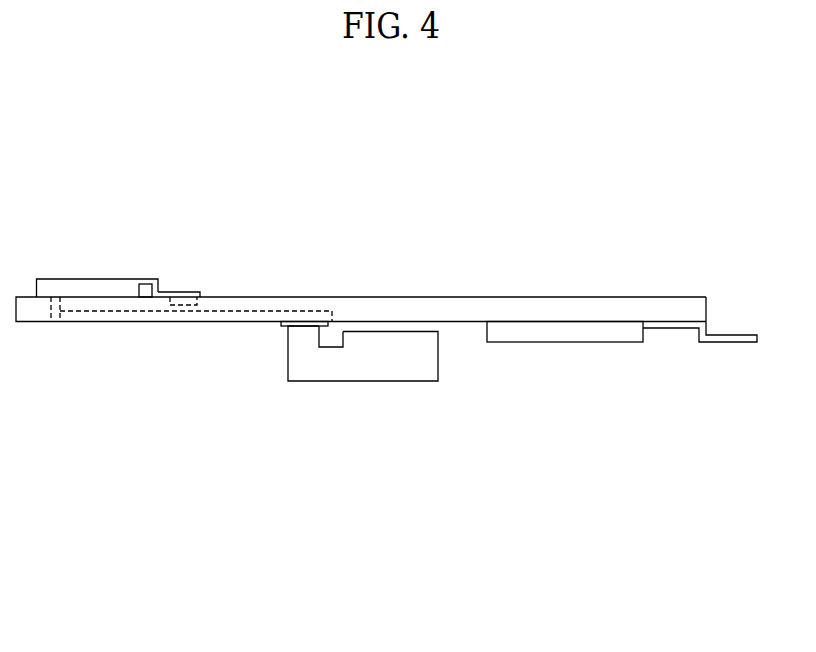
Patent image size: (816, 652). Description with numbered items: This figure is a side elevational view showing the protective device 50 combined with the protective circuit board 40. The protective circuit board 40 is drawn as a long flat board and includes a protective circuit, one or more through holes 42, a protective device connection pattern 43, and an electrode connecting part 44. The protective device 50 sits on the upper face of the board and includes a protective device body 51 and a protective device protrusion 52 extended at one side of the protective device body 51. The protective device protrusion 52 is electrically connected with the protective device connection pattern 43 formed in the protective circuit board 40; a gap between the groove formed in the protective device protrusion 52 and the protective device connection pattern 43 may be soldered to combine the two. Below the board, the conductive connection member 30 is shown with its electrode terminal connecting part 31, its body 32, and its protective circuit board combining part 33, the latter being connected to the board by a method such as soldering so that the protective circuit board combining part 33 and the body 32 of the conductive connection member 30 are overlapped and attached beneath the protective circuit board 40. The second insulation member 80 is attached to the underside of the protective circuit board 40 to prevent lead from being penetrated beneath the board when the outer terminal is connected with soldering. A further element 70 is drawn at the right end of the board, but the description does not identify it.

The conductive connection member 30 is at (330, 404).
The electrode terminal connecting part 31 is at (384, 387).
The body 32 is at (302, 367).
The protective circuit board combining part 33 is at (282, 328).
The protective circuit board 40 is at (533, 278).
The through hole 42 is at (51, 323).
The protective device connection pattern 43 is at (190, 299).
The electrode connecting part 44 is at (160, 323).
The protective device 50 is at (133, 258).
The protective device body 51 is at (60, 285).
The protective device protrusion 52 is at (175, 292).
The connector 70 is at (712, 343).
The second insulation member 80 is at (563, 335).